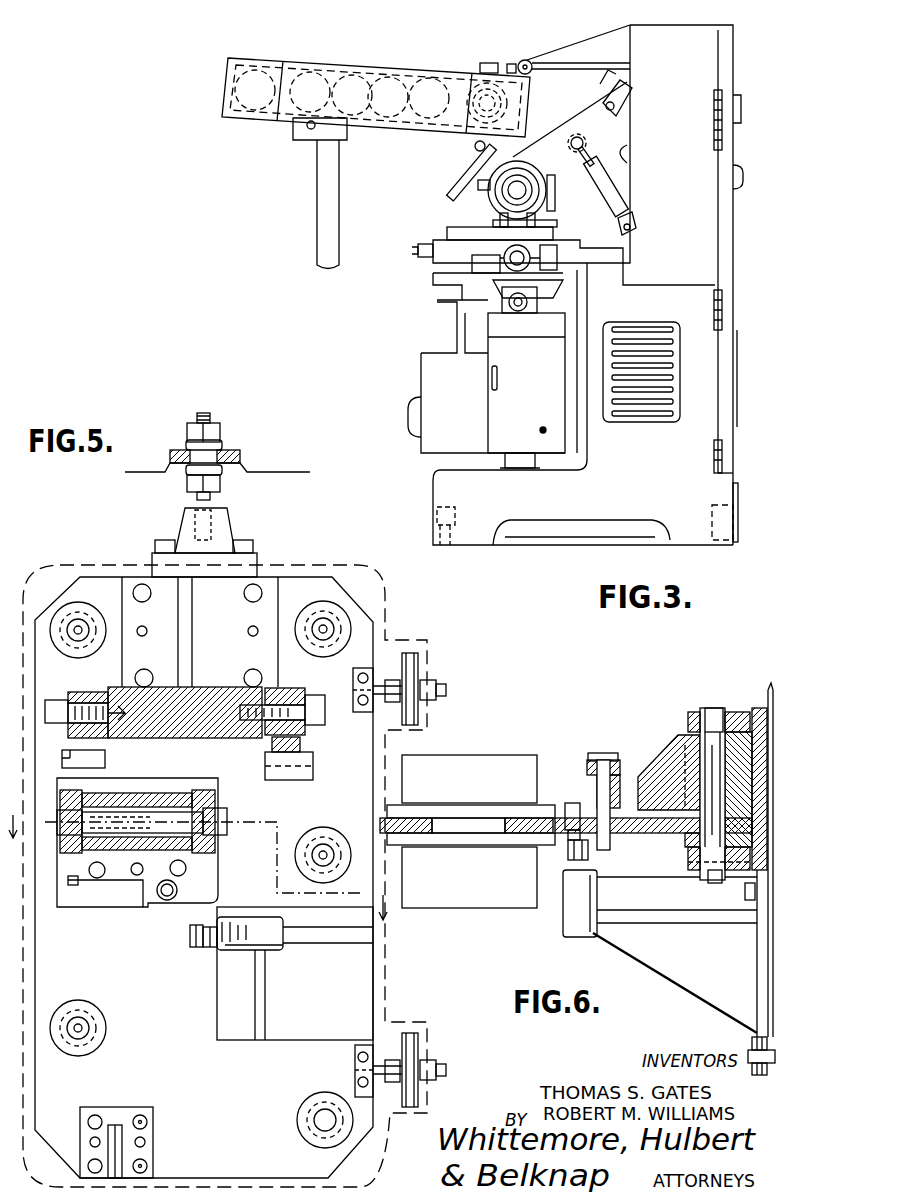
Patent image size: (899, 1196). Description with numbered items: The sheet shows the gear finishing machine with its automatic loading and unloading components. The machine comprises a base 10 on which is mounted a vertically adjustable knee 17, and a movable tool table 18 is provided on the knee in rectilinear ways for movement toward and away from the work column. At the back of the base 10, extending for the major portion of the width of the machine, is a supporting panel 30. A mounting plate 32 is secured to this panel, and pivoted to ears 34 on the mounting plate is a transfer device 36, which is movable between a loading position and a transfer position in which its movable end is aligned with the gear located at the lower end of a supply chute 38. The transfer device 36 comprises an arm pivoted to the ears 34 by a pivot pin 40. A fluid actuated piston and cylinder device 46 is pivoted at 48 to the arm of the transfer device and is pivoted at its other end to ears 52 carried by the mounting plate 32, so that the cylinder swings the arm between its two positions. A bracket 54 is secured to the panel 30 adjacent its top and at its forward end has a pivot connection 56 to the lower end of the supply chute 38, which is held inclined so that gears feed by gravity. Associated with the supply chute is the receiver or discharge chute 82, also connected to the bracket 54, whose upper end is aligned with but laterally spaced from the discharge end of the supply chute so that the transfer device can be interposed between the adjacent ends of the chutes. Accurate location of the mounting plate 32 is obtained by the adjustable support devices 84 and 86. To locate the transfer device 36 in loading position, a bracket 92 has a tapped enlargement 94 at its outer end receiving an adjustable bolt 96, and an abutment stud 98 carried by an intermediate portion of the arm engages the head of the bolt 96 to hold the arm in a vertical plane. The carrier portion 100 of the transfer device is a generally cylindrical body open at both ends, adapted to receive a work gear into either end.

In FIG. 3, the base 10 is at (433, 505).
In FIG. 3, the vertically adjustable knee 17 is at (450, 455).
In FIG. 3, the tool table 18 is at (447, 285).
In FIG. 3, the supporting panel 30 is at (735, 60).
In FIG. 3, the mounting plate 32 is at (627, 154).
In FIG. 5, the mounting plate 32 is at (385, 972).
In FIG. 3, the ears 34 is at (582, 110).
In FIG. 6, the ears 34 is at (698, 712).
In FIG. 3, the transfer device 36 is at (552, 150).
In FIG. 5, the transfer device 36 is at (150, 795).
In FIG. 6, the transfer device 36 is at (575, 800).
In FIG. 3, the supply chute 38 is at (408, 70).
In FIG. 5, the supply chute 38 is at (313, 762).
In FIG. 5, the pivot pin 40 is at (142, 821).
In FIG. 6, the pivot pin 40 is at (718, 708).
In FIG. 3, the fluid actuated piston and cylinder device 46 is at (600, 203).
In FIG. 6, the pivot 48 is at (615, 760).
In FIG. 5, the ears 52 is at (153, 1148).
In FIG. 3, the bracket 54 is at (595, 43).
In FIG. 5, the bracket 54 is at (120, 665).
In FIG. 5, the pivot connection 56 is at (308, 700).
In FIG. 5, the discharge chute 82 is at (98, 759).
In FIG. 5, the adjustable support device 84 is at (252, 456).
In FIG. 5, the adjustable support device 86 is at (459, 682).
In FIG. 5, the bracket 92 is at (237, 1040).
In FIG. 6, the bracket 92 is at (726, 959).
In FIG. 5, the tapped enlargement 94 is at (252, 950).
In FIG. 6, the tapped enlargement 94 is at (562, 925).
In FIG. 5, the adjustable bolt 96 is at (195, 948).
In FIG. 6, the adjustable bolt 96 is at (592, 846).
In FIG. 6, the abutment stud 98 is at (568, 838).
In FIG. 6, the carrier 100 is at (450, 764).